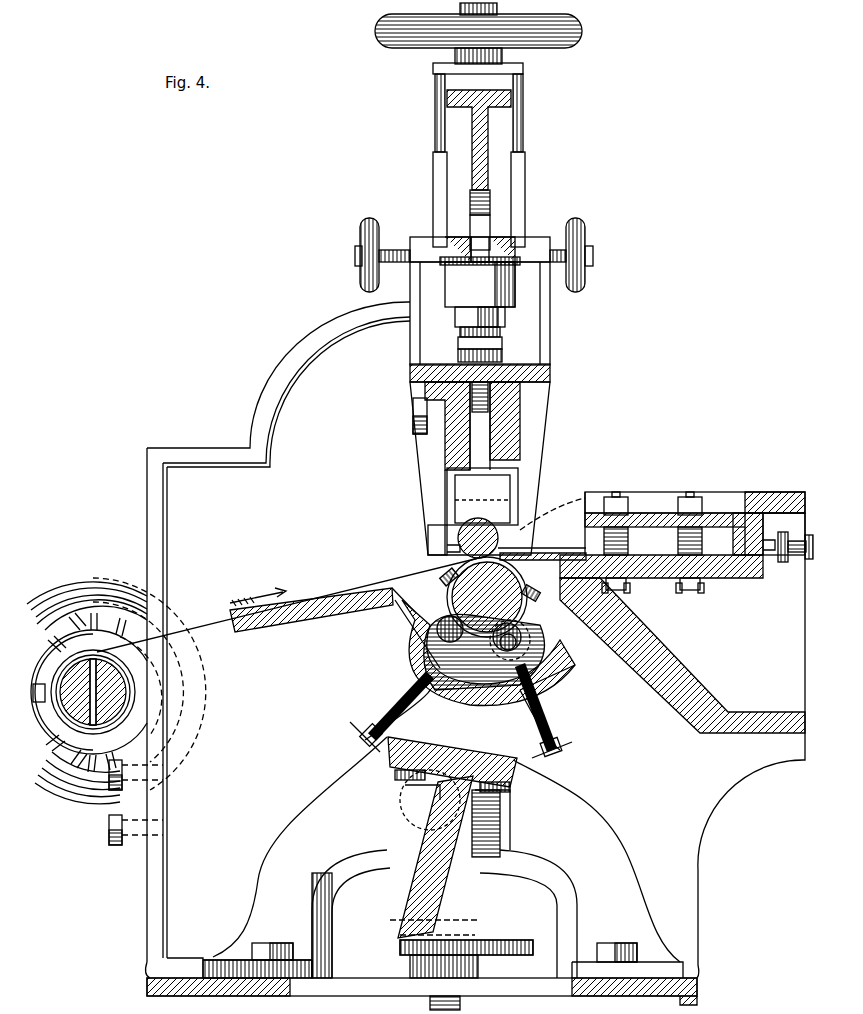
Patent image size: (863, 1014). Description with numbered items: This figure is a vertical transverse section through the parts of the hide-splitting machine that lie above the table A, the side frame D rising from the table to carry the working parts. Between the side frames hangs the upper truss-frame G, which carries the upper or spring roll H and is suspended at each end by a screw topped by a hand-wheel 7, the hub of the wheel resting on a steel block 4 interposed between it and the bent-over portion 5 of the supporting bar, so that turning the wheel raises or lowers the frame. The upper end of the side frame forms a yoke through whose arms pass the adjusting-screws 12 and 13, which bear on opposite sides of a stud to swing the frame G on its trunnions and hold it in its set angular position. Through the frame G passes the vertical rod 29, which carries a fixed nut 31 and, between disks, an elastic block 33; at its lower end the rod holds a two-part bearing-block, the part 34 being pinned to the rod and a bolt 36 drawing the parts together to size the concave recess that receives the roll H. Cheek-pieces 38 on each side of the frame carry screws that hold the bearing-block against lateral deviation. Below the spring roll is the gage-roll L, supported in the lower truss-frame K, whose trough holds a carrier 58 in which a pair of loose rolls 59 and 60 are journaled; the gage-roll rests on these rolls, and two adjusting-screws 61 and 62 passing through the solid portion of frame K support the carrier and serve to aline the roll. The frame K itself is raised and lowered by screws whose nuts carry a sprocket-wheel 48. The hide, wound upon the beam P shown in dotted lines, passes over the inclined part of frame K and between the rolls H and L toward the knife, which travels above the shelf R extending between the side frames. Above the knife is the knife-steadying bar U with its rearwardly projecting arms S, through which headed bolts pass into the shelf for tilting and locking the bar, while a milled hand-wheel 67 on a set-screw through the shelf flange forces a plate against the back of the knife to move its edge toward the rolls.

The table A is at (700, 976).
The side frame D is at (699, 841).
The hand-wheel 7 is at (484, 33).
The steel block 4 is at (518, 106).
The bent-over portion of bar 5 is at (537, 155).
The vertical rod 29 is at (487, 240).
The elastic block 33 is at (480, 311).
The fixed nut 31 is at (455, 322).
The adjusting-screw 12 is at (372, 222).
The adjusting-screw 13 is at (578, 222).
The truss-frame G is at (551, 372).
The cheek-piece 38 is at (420, 462).
The bolt 36 is at (510, 487).
The bearing-block part 34 is at (478, 530).
The upper or spring roll H is at (447, 540).
The knife-steadying bar U is at (566, 515).
The projecting arm S is at (660, 516).
The shelf R is at (682, 555).
The milled head or hand-wheel 67 is at (810, 545).
The guide-roll or gage-roll L is at (452, 591).
The loose roll 59 is at (440, 620).
The loose roll 60 is at (540, 610).
The carrier 58 is at (484, 652).
The lower truss-frame K is at (580, 689).
The adjusting-screw 61 is at (390, 713).
The adjusting-screw 62 is at (546, 722).
The sprocket-wheel 48 is at (498, 945).
The beam P is at (89, 692).